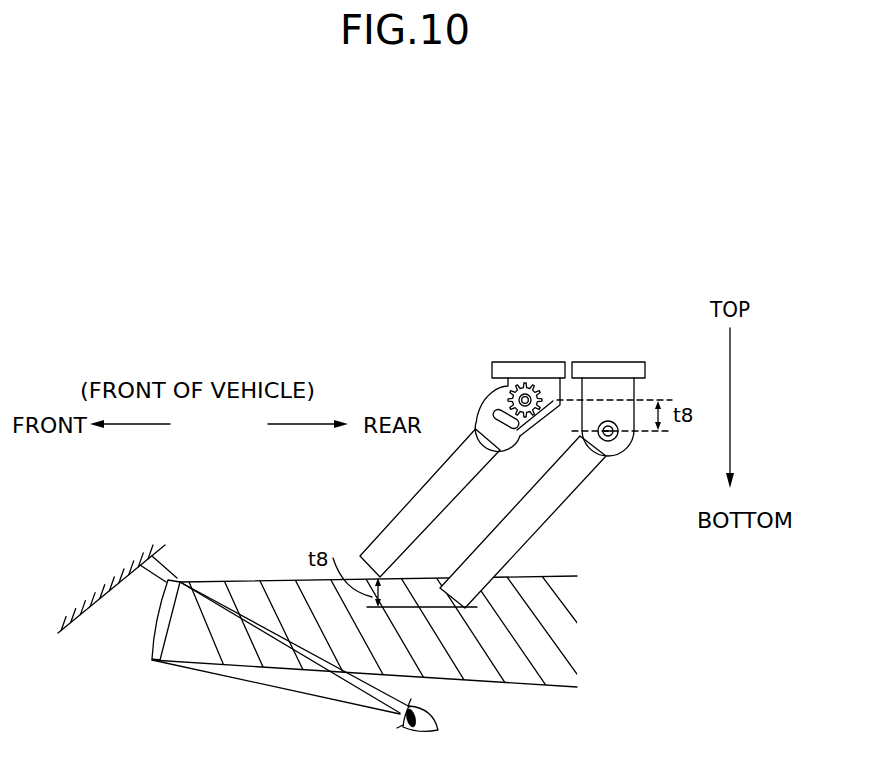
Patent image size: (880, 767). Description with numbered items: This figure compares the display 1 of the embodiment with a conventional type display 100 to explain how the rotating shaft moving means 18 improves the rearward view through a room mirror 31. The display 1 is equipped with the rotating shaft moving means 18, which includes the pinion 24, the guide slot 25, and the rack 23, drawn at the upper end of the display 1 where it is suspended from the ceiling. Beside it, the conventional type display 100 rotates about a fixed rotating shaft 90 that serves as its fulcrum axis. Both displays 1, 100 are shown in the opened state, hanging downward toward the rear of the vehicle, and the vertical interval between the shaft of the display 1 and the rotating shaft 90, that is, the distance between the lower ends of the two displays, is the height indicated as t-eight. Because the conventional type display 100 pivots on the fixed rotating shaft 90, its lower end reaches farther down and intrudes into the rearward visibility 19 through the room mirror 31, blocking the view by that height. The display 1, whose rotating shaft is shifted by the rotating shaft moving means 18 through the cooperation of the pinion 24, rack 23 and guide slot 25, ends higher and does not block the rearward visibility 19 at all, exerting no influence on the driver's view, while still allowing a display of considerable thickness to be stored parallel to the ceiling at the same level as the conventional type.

The display 1 is at (420, 497).
The rotating shaft moving means 18 is at (503, 355).
The rearward visibility 19 is at (597, 577).
The rack 23 is at (549, 378).
The pinion 24 is at (516, 385).
The guide slot 25 is at (505, 410).
The room mirror 31 is at (154, 638).
The fixed rotating shaft 90 is at (616, 439).
The conventional type display 100 is at (553, 503).